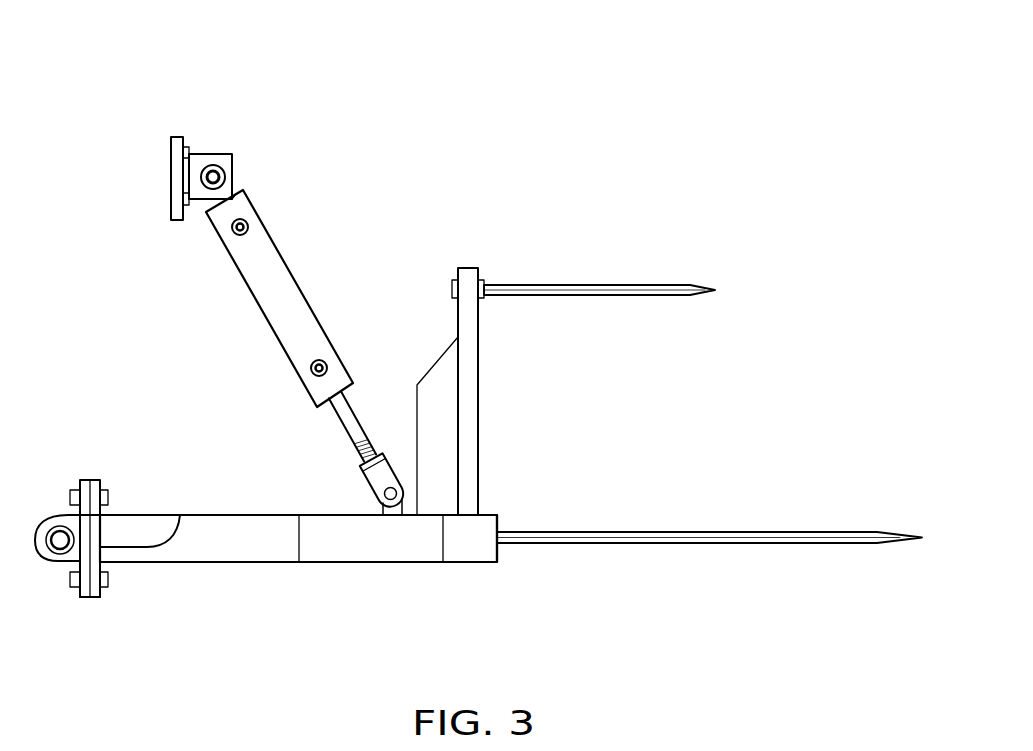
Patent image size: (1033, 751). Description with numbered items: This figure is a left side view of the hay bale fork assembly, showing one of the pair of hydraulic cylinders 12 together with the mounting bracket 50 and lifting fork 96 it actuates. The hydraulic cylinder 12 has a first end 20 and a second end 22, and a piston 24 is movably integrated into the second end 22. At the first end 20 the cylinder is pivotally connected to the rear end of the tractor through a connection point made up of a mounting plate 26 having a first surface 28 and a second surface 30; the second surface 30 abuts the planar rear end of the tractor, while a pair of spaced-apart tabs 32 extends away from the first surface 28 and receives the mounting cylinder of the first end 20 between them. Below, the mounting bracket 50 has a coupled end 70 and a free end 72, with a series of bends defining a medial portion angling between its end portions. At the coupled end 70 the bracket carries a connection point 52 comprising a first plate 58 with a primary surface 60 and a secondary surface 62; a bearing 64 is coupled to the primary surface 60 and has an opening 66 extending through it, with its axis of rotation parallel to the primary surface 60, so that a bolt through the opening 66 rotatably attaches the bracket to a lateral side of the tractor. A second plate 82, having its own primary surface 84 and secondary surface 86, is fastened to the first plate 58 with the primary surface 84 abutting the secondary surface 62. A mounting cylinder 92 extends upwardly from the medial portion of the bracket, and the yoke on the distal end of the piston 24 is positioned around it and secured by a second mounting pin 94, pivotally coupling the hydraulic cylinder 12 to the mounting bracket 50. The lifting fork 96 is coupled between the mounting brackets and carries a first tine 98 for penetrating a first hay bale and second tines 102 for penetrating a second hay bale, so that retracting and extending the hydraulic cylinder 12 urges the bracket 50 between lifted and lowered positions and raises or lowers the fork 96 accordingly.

The hydraulic cylinder 12 is at (302, 284).
The first end 20 is at (241, 188).
The second end 22 is at (325, 403).
The piston 24 is at (362, 420).
The mounting plate 26 is at (178, 137).
The first surface 28 is at (189, 199).
The second surface 30 is at (171, 177).
The tab 32 is at (213, 154).
The mounting bracket 50 is at (370, 562).
The connection point 52 is at (94, 462).
The first plate 58 is at (85, 598).
The primary surface 60 is at (72, 584).
The secondary surface 62 is at (102, 563).
The bearing 64 is at (46, 522).
The opening 66 is at (51, 559).
The coupled end 70 is at (97, 523).
The free end 72 is at (497, 562).
The second plate 82 is at (101, 486).
The primary surface 84 is at (90, 497).
The secondary surface 86 is at (180, 516).
The mounting cylinder 92 is at (381, 511).
The second mounting pin 94 is at (387, 492).
The lifting fork 96 is at (526, 264).
The first tine 98 is at (683, 543).
The second tine 102 is at (627, 287).